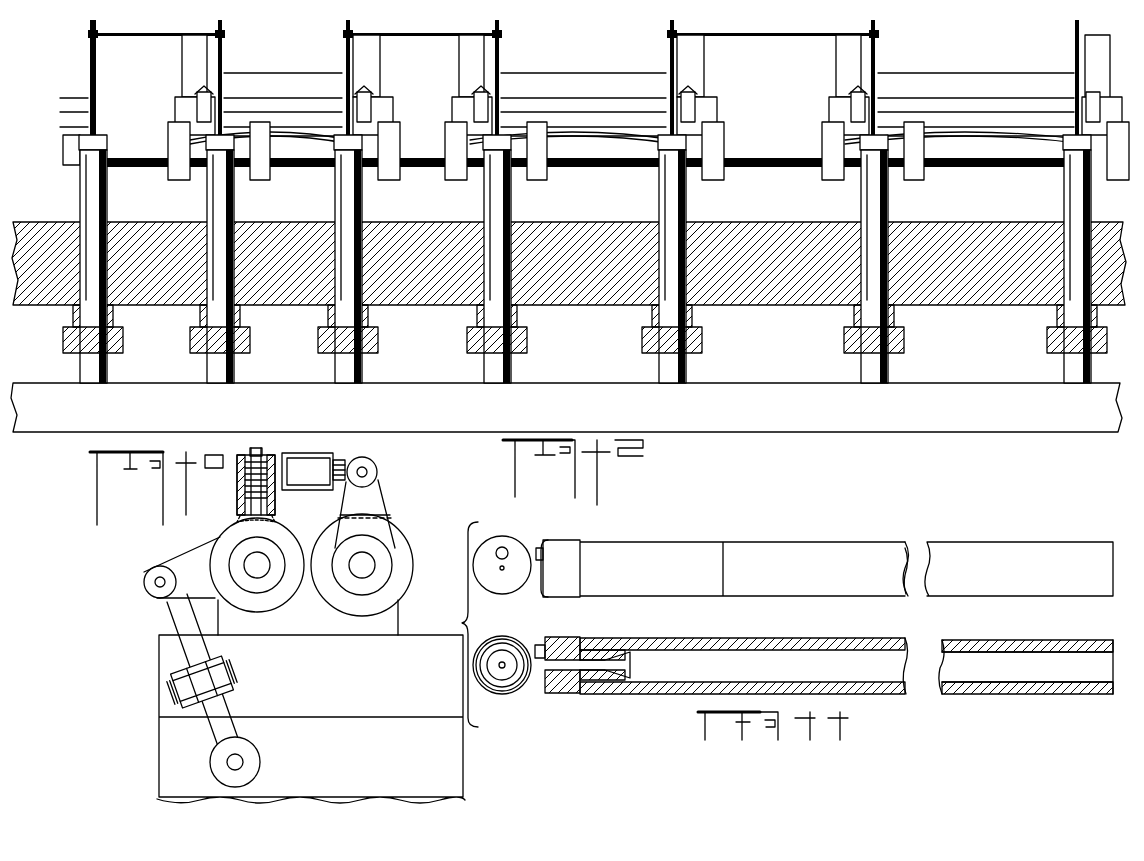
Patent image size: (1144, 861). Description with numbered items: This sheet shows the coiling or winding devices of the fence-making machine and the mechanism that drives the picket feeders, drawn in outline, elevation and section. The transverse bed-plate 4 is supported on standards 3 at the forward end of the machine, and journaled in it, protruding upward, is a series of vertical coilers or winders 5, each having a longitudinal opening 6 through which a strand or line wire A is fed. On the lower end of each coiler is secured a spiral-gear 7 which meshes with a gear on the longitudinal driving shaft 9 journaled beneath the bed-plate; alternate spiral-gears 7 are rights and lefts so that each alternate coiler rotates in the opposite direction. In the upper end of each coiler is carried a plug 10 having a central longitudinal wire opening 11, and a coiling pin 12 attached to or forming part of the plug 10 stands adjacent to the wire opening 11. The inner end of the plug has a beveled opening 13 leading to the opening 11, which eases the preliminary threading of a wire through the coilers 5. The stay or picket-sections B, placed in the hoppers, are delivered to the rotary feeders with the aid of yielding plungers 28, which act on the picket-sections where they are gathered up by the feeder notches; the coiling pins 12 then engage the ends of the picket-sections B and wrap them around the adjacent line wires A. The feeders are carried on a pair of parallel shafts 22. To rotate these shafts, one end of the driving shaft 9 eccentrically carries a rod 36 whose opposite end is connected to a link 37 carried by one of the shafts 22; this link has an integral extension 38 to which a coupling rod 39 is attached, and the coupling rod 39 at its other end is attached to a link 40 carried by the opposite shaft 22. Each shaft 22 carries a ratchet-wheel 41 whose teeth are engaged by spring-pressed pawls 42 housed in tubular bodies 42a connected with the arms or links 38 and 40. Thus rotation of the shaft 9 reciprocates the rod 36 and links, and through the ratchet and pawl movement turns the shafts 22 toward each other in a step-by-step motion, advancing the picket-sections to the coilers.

In FIG. 10, the bed-plate 4 is at (803, 298).
In FIG. 10, the strand or line wires A is at (330, 52).
In FIG. 12, the strand or line wires A is at (311, 701).
In FIG. 10, the stay or picket-sections B is at (150, 38).
In FIG. 10, the standards 3 is at (290, 132).
In FIG. 10, the coilers or winders 5 is at (335, 196).
In FIG. 11, the coilers or winders 5 is at (512, 590).
In FIG. 10, the spiral-gear 7 is at (318, 342).
In FIG. 10, the shafts 22 is at (410, 176).
In FIG. 12, the shafts 22 is at (318, 565).
In FIG. 10, the yielding plungers 28 is at (366, 118).
In FIG. 12, the rod 36 is at (234, 722).
In FIG. 12, the link 37 is at (214, 567).
In FIG. 12, the integral extension 38 is at (235, 538).
In FIG. 12, the coupling rod 39 is at (315, 478).
In FIG. 12, the link 40 is at (375, 502).
In FIG. 12, the ratchet-wheel 41 is at (318, 620).
In FIG. 12, the spring-pressed pawls 42 is at (248, 505).
In FIG. 12, the tubular bodies 42a is at (262, 452).
In FIG. 12, the longitudinal shaft 9 is at (259, 768).
In FIG. 11, the plug 10 is at (598, 693).
In FIG. 11, the central longitudinal wire opening 11 is at (503, 570).
In FIG. 11, the coiling pin 12 is at (508, 550).
In FIG. 11, the beveled opening 13 is at (612, 665).
In FIG. 11, the longitudinal openings 6 is at (1026, 667).